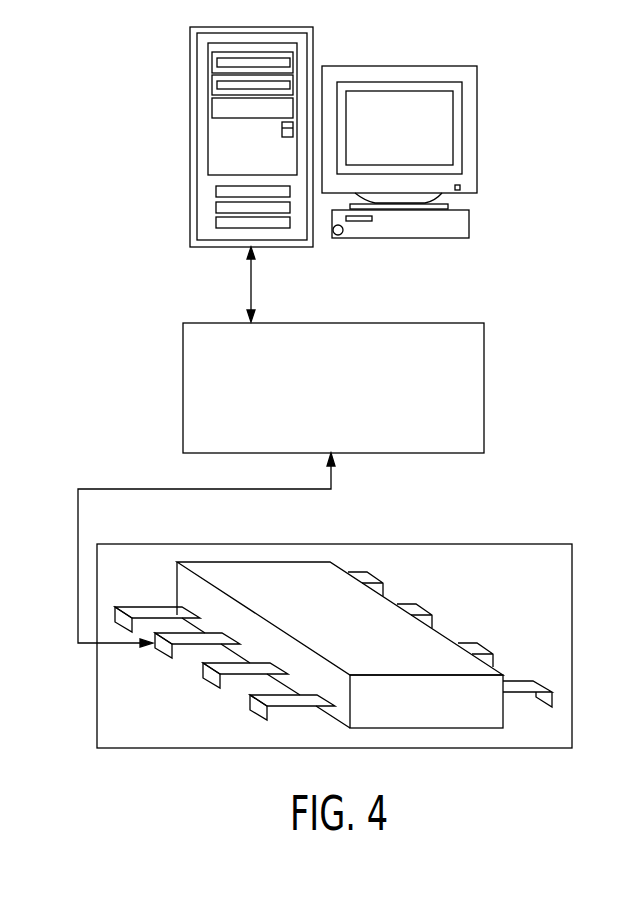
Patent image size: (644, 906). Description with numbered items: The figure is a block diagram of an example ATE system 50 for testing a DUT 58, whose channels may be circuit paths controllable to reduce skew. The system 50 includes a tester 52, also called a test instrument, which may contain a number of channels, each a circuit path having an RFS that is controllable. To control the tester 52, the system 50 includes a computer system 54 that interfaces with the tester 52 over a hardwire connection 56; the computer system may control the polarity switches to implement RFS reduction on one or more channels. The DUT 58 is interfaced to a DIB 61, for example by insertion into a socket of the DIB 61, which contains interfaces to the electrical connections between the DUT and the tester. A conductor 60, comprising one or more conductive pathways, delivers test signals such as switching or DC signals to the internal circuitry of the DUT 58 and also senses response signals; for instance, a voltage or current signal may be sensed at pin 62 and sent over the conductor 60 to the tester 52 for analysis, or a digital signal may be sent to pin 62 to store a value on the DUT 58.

The ATE system 50 is at (556, 144).
The tester 52 is at (484, 389).
The computer system 54 is at (190, 134).
The hardwire connection 56 is at (251, 287).
The DUT 58 is at (262, 562).
The conductor 60 is at (331, 480).
The DIB 61 is at (572, 628).
The pin 62 is at (163, 653).